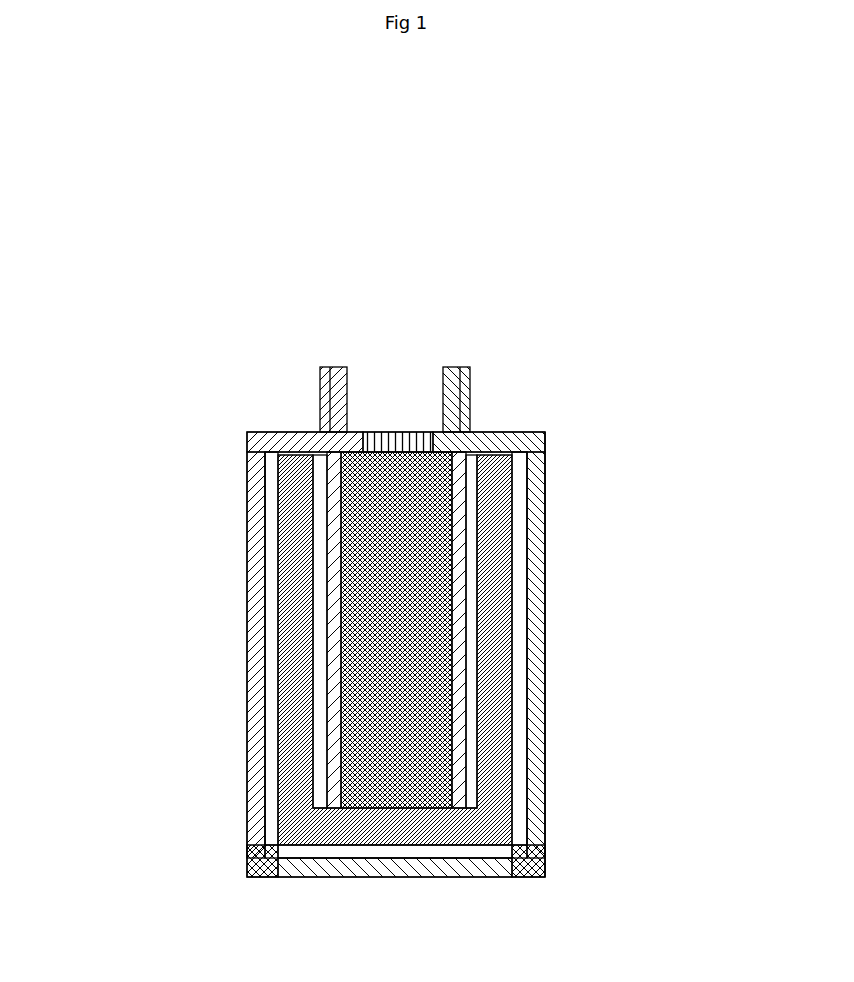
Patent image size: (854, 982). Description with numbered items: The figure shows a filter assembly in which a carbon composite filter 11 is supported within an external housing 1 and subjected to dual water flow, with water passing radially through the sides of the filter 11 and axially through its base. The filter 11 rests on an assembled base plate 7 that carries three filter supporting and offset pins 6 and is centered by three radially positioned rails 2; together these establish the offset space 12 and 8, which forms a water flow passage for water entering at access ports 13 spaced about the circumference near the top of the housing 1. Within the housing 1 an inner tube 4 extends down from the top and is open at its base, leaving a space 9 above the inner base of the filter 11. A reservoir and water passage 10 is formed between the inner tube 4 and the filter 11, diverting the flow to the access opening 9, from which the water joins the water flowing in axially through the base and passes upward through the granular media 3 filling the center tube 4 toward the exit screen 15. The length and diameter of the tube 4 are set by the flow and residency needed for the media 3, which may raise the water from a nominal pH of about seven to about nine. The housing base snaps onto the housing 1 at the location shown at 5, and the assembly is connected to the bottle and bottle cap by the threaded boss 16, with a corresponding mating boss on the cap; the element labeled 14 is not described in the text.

The housing 1 is at (235, 457).
The radially positioned rails 2 is at (247, 535).
The granular media 3 is at (343, 673).
The tube 4 is at (330, 777).
The snap connection 5 is at (257, 847).
The filter supporting and offset pins 6 is at (270, 875).
The base plate 7 is at (312, 848).
The offset space 8 is at (445, 852).
The space / access opening 9 is at (458, 805).
The reservoir and water passage 10 is at (468, 707).
The carbon composite filter 11 is at (510, 645).
The offset space 12 is at (518, 557).
The access ports 13 is at (550, 483).
The top cover plate 14 is at (550, 422).
The exit screen 15 is at (393, 408).
The threaded boss 16 is at (333, 362).